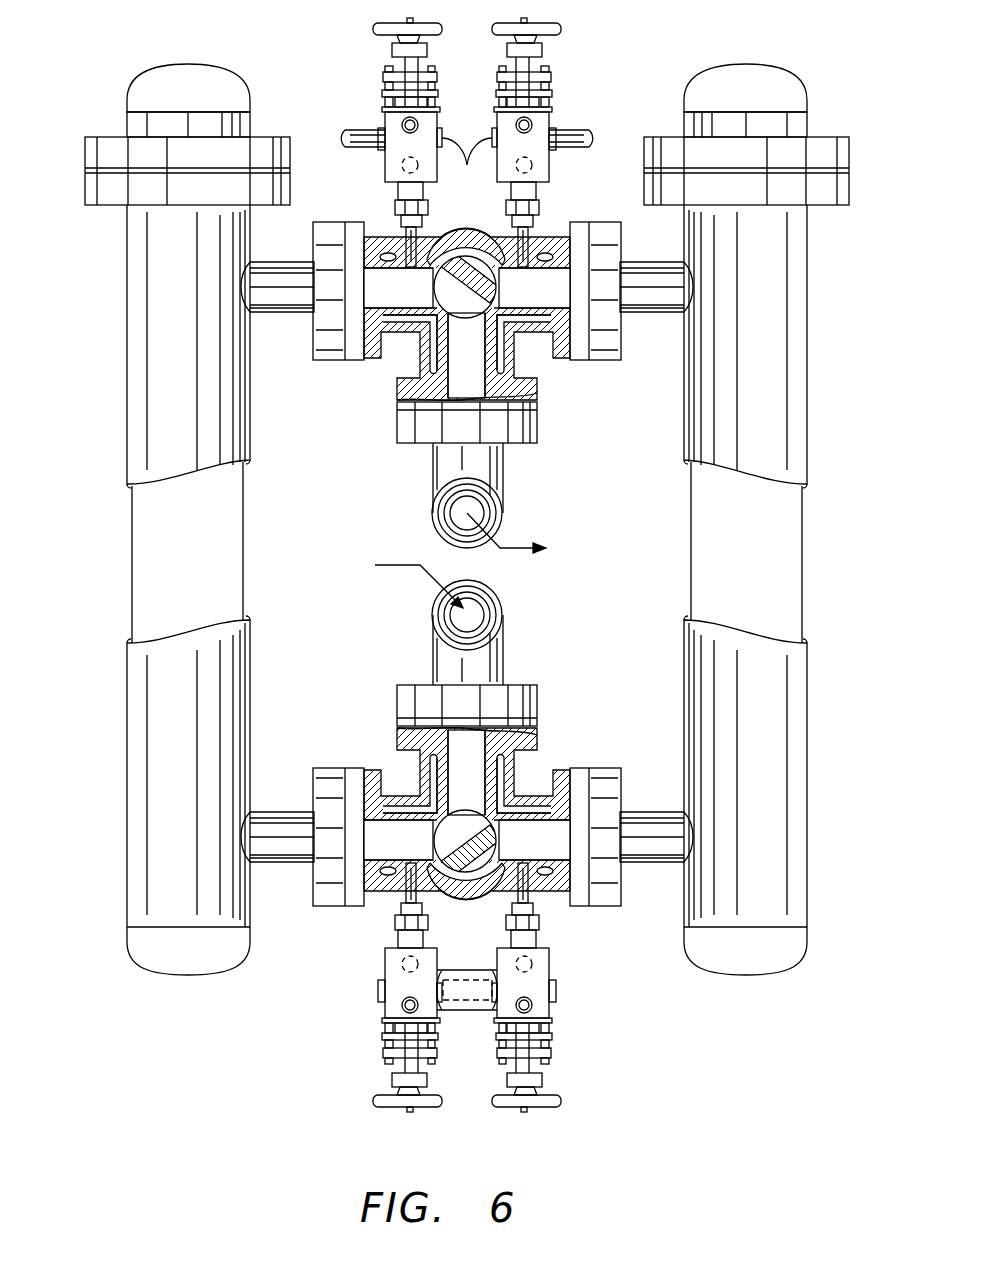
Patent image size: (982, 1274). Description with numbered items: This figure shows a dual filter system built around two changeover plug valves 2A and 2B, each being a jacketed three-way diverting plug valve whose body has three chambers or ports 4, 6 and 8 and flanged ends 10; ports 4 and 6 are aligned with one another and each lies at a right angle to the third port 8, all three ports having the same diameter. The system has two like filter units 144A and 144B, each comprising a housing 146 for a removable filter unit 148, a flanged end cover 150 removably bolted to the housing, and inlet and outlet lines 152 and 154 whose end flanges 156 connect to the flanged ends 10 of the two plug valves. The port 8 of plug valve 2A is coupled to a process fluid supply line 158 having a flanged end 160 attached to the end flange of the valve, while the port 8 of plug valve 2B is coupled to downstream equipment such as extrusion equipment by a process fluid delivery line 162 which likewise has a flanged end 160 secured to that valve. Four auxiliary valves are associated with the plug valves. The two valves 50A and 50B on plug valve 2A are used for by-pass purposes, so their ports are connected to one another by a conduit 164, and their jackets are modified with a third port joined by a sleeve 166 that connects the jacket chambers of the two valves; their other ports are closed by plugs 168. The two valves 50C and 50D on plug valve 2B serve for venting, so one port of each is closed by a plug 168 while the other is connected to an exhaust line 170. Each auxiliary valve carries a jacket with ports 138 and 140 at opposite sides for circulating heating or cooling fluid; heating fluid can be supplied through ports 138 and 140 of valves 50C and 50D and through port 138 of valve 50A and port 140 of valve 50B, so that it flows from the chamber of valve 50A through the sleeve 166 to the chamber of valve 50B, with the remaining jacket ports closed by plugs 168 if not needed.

The changeover plug valve 2A is at (373, 733).
The changeover plug valve 2B is at (362, 386).
The port 4 is at (397, 280).
The port 6 is at (534, 303).
The third port 8 is at (450, 342).
The flanged end 10 is at (580, 230).
The auxiliary valve 50A is at (372, 1017).
The auxiliary valve 50B is at (562, 1011).
The auxiliary valve 50C is at (372, 92).
The auxiliary valve 50D is at (560, 92).
The jacket port 138 is at (532, 124).
The jacket port 140 is at (532, 166).
The filter unit 144A is at (127, 688).
The filter unit 144B is at (808, 697).
The housing 146 is at (130, 423).
The removable filter unit 148 is at (145, 525).
The flanged end cover 150 is at (128, 124).
The inlet line 152 is at (292, 812).
The outlet line 154 is at (292, 262).
The end flange 156 is at (593, 226).
The process fluid supply line 158 is at (503, 642).
The flanged end 160 is at (538, 430).
The process fluid delivery line 162 is at (503, 478).
The conduit 164 is at (472, 975).
The sleeve 166 is at (472, 1012).
The plug 168 is at (463, 165).
The exhaust line 170 is at (358, 133).